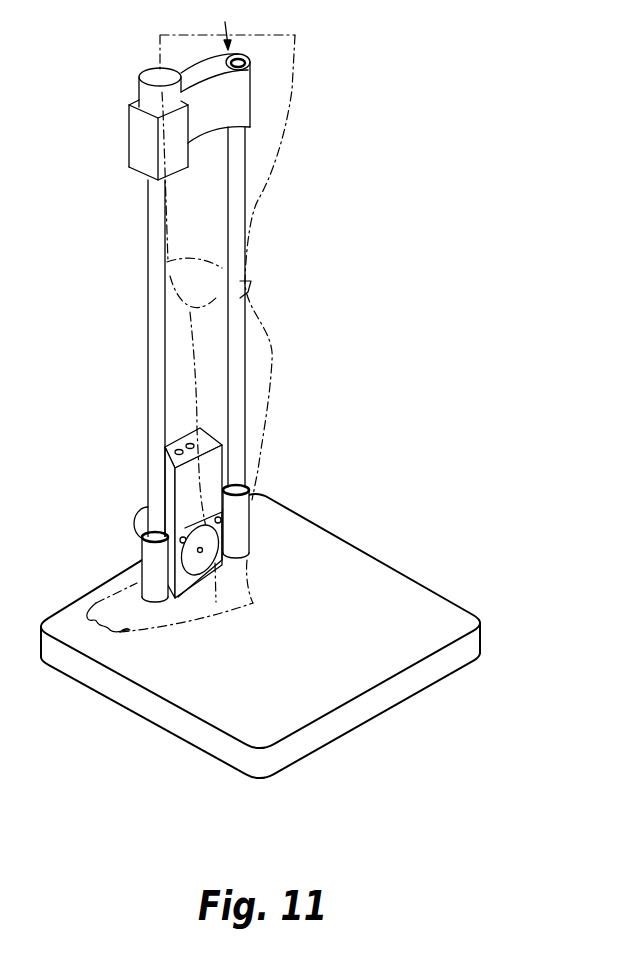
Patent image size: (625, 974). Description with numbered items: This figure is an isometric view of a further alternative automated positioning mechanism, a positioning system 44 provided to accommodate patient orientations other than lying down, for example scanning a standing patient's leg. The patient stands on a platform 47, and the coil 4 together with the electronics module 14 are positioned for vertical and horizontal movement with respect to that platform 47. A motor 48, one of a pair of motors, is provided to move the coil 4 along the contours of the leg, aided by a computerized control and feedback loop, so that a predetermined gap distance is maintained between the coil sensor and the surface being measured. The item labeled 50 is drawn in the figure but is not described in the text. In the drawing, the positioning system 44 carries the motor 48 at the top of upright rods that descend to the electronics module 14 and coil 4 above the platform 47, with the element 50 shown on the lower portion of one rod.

The coil 4 is at (211, 549).
The electronics module 14 is at (212, 478).
The positioning system 44 is at (330, 212).
The platform 47 is at (416, 600).
The motor 48 is at (125, 150).
The collar 50 is at (126, 520).